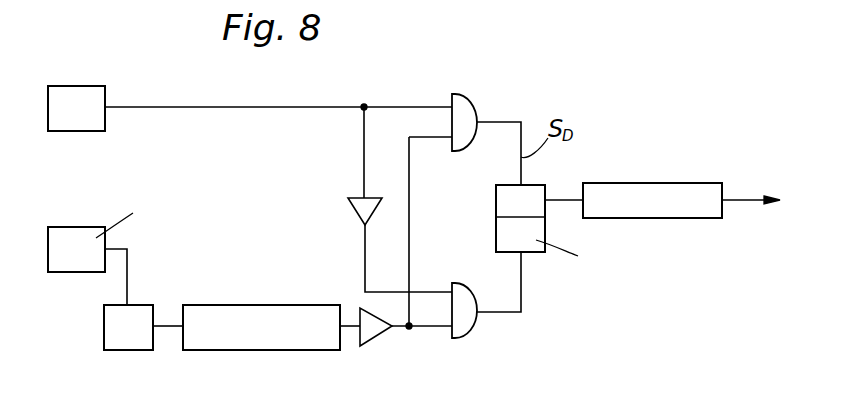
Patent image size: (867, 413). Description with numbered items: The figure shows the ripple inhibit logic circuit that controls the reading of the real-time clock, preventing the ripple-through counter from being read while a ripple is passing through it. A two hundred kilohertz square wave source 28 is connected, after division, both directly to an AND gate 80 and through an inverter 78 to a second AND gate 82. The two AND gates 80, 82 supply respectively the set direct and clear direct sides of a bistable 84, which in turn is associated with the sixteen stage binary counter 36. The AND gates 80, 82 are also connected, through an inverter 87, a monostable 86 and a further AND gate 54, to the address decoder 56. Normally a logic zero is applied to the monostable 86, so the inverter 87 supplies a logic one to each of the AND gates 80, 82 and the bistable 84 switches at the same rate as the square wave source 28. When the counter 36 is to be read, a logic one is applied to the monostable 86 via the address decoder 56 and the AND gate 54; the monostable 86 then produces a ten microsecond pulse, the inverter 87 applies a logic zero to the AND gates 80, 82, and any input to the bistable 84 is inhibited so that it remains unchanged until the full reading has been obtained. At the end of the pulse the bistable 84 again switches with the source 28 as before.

The square wave generator 28 is at (106, 91).
The sixteen stage binary counter 36 is at (641, 183).
The AND gate 54 is at (140, 305).
The address decoder 56 is at (82, 227).
The inverter 78 is at (347, 212).
The AND gate 80 is at (476, 98).
The AND gate 82 is at (463, 281).
The bistable 84 is at (480, 220).
The monostable 86 is at (248, 305).
The inverter 87 is at (380, 338).